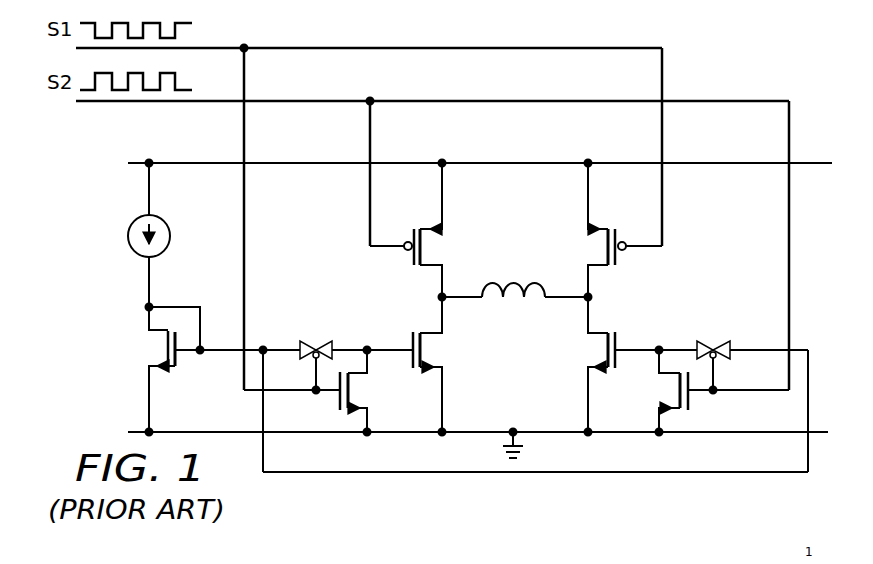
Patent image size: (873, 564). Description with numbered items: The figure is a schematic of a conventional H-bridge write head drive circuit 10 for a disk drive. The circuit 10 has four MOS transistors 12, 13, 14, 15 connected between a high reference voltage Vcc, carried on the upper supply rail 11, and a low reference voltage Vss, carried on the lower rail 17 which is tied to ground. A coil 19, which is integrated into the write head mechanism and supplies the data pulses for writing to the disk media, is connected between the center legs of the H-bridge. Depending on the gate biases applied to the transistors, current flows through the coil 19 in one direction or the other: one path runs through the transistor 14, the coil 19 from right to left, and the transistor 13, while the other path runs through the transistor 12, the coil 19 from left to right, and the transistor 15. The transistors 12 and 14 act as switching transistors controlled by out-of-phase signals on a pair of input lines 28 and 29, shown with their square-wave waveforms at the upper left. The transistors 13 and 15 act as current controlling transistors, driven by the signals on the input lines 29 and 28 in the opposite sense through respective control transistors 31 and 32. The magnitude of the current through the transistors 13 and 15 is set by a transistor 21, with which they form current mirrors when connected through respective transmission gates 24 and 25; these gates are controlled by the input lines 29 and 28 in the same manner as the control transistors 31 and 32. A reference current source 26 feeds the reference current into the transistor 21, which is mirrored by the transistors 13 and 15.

The H-bridge write head drive circuit 10 is at (736, 48).
The supply voltage line VCC 11 is at (527, 163).
The switching transistor 12 is at (410, 260).
The current controlling transistor 13 is at (410, 335).
The switching transistor 14 is at (618, 262).
The current controlling transistor 15 is at (618, 335).
The ground line VSS 17 is at (545, 430).
The coil 19 is at (522, 282).
The transistor 21 is at (178, 358).
The transmission gate 24 is at (320, 342).
The transmission gate 25 is at (706, 344).
The reference current source 26 is at (128, 236).
The input line 28 is at (517, 100).
The input line 29 is at (517, 48).
The control transistor 31 is at (336, 403).
The control transistor 32 is at (695, 403).